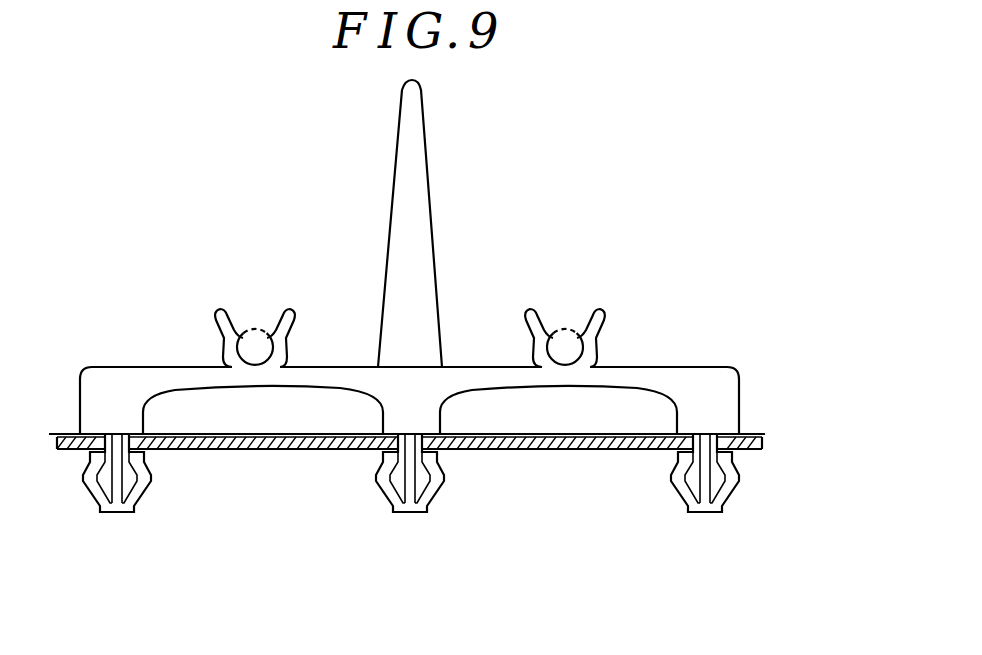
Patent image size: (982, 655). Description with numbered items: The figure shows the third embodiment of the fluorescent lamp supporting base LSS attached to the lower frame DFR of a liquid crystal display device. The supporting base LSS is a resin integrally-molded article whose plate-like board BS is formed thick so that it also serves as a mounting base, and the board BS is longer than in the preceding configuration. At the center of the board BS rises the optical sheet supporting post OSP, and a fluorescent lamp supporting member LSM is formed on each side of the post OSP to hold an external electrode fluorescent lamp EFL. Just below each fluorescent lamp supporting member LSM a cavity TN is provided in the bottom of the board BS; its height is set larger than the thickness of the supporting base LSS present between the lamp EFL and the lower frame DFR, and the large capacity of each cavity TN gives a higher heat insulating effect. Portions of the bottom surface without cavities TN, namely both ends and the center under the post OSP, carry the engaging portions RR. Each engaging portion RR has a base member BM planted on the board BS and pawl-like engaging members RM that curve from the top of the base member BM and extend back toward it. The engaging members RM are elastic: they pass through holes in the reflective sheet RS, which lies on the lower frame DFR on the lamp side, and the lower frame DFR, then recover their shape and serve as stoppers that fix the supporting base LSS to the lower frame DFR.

The fluorescent lamp supporting base LSS is at (363, 205).
The optical sheet supporting post OSP is at (422, 155).
The board BS is at (683, 378).
The cavity TN is at (223, 421).
The fluorescent lamp supporting member LSM is at (235, 331).
The external electrode fluorescent lamp EFL is at (252, 322).
The reflective sheet RS is at (751, 432).
The lower frame DFR is at (749, 452).
The engaging member RM is at (433, 500).
The engaging portion RR is at (123, 525).
The base member BM is at (407, 482).